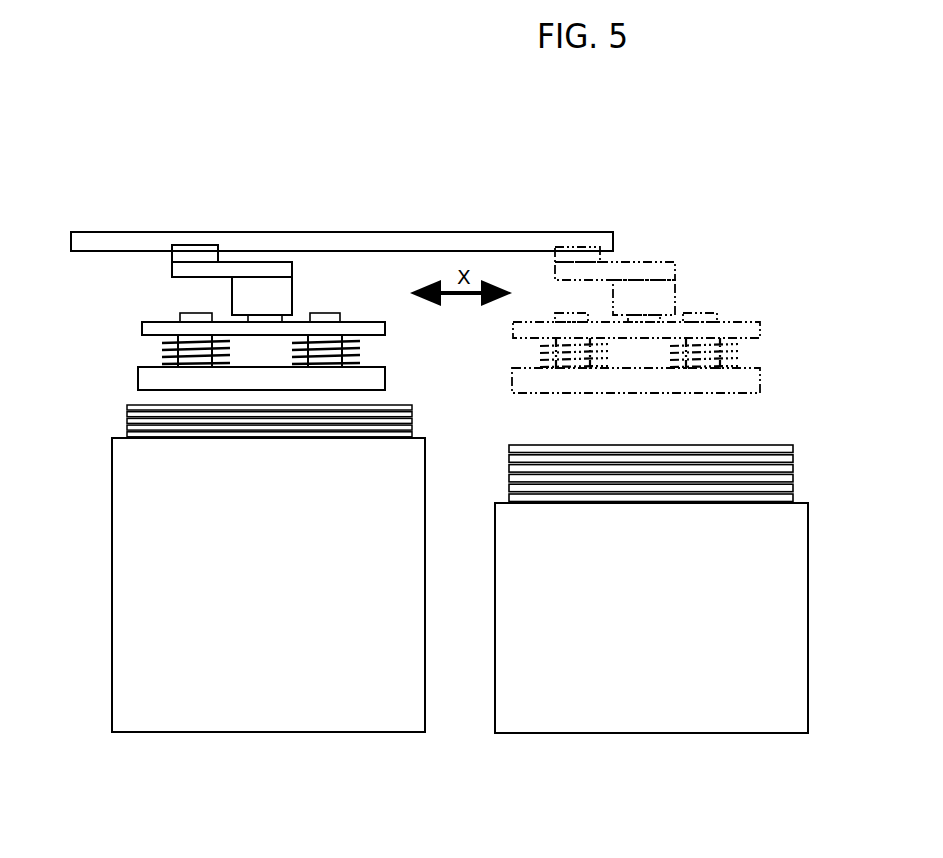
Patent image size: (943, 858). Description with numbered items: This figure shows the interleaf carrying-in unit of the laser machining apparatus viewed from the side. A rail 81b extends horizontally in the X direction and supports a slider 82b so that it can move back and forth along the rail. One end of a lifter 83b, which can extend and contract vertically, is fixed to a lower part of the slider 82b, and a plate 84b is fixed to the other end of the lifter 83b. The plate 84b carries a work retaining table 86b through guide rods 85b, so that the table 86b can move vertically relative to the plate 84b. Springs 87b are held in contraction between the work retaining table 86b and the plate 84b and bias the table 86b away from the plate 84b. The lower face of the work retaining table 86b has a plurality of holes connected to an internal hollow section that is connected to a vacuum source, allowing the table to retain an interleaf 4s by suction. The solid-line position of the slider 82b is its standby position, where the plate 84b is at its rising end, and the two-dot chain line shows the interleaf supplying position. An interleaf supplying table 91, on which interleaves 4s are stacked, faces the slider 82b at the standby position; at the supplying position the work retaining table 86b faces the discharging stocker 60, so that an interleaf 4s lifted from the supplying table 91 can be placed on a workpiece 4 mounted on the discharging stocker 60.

The rail 81b is at (398, 232).
The slider 82b is at (172, 268).
The lifter 83b is at (292, 296).
The plate 84b is at (142, 327).
The guide rods 85b is at (342, 314).
The work retaining table 86b is at (385, 377).
The springs 87b is at (345, 350).
The workpiece 4 is at (793, 447).
The interleaf 4s is at (118, 420).
The interleaf supplying table 91 is at (112, 624).
The discharging stocker 60 is at (808, 627).